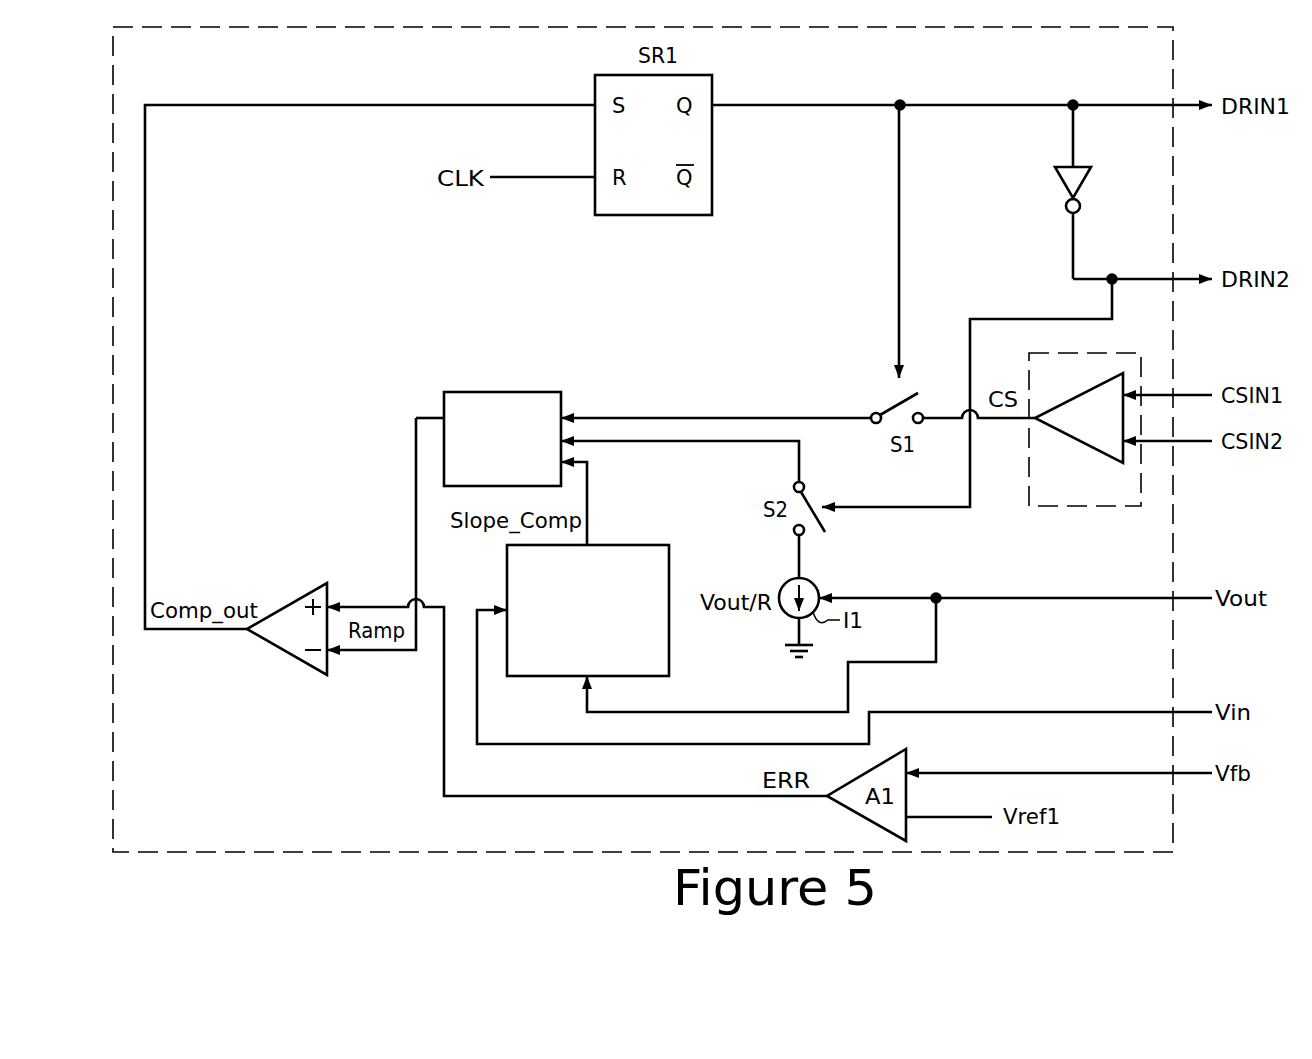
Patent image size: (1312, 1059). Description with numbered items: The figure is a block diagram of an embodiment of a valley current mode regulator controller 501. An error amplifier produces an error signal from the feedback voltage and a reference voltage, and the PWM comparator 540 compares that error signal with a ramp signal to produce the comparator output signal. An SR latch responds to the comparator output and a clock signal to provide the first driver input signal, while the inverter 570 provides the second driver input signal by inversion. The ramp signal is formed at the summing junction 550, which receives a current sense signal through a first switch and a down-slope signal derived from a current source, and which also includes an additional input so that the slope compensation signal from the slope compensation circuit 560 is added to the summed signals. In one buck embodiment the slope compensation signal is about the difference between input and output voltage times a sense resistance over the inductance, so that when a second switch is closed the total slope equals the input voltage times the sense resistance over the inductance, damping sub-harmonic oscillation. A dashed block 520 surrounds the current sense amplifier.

The regulator controller 501 is at (192, 816).
The current sense amplifier 520 is at (1075, 495).
The PWM comparator 540 is at (295, 600).
The summing junction 550 is at (520, 477).
The slope compensation circuit 560 is at (606, 667).
The inverter 570 is at (1080, 182).